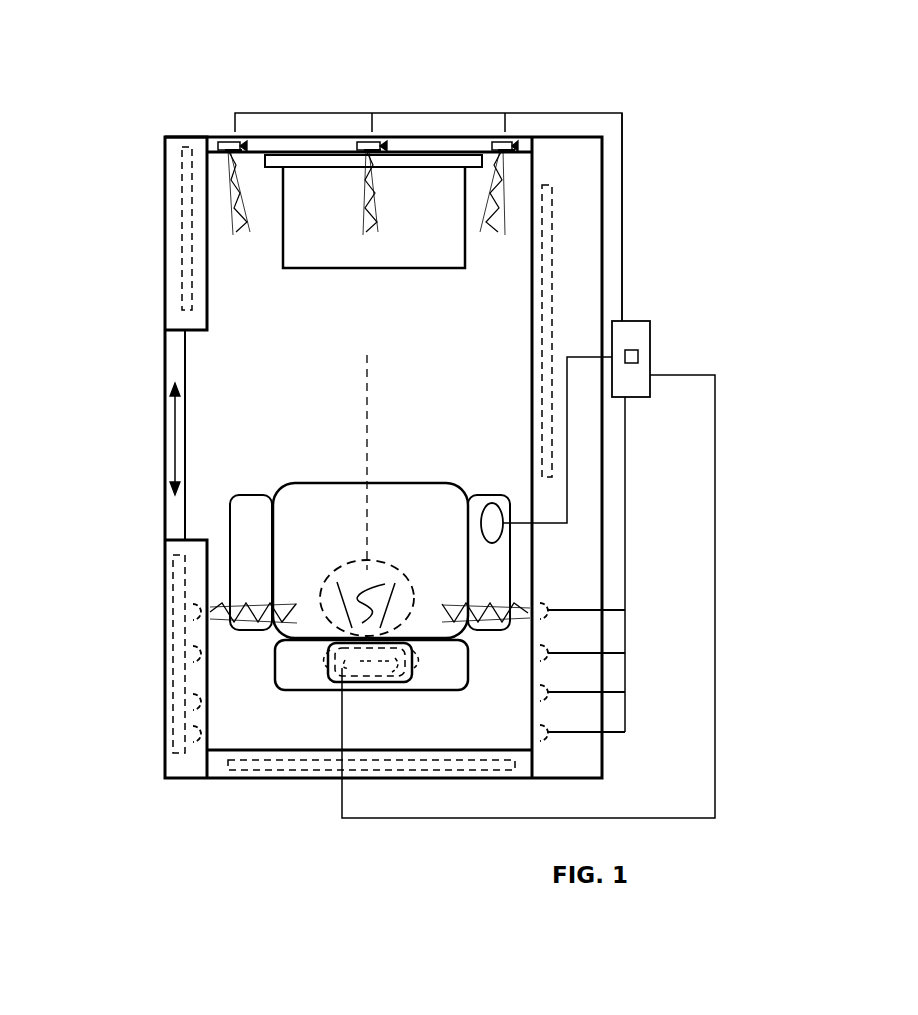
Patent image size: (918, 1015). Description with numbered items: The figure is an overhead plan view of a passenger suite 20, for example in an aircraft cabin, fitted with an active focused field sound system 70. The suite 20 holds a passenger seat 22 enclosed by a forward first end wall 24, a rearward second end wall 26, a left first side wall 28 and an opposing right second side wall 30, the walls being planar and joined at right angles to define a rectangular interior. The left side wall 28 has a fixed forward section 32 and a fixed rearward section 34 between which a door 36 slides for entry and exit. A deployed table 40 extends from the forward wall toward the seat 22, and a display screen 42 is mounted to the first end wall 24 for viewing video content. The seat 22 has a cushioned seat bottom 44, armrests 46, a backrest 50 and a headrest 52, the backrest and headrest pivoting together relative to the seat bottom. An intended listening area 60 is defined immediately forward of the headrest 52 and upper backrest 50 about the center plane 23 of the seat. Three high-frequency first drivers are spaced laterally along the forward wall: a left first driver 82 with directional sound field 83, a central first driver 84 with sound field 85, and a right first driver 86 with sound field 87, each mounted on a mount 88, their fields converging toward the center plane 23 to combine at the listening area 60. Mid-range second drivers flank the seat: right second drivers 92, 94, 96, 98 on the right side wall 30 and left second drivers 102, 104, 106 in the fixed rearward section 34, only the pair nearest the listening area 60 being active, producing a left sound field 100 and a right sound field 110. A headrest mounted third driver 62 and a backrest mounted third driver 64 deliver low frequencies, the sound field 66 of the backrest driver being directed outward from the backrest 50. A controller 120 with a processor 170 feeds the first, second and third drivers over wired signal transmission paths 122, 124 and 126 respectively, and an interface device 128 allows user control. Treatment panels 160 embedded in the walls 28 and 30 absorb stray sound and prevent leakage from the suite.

The passenger suite 20 is at (578, 70).
The passenger seat 22 is at (312, 461).
The center plane 23 is at (362, 504).
The first end wall 24 is at (292, 133).
The second end wall 26 is at (218, 779).
The first side wall 28 is at (128, 324).
The second side wall 30 is at (603, 506).
The fixed forward section 32 is at (165, 265).
The fixed rearward section 34 is at (165, 601).
The door 36 is at (165, 511).
The table 40 is at (388, 270).
The display screen 42 is at (320, 168).
The seat bottom 44 is at (418, 482).
The armrests 46 is at (245, 494).
The backrest 50 is at (290, 691).
The headrest 52 is at (328, 681).
The intended listening area 60 is at (397, 576).
The headrest mounted third driver 62 is at (383, 682).
The backrest mounted third driver 64 is at (418, 667).
The sound field 66 is at (395, 600).
The active focused field sound system 70 is at (665, 213).
The first driver 82 is at (225, 141).
The directional sound field 83 is at (240, 237).
The central first driver 84 is at (355, 141).
The directional sound field 85 is at (362, 229).
The lateral right first driver 86 is at (492, 141).
The directional sound field 87 is at (491, 237).
The camera mount 88 is at (241, 151).
The right second driver 92 is at (548, 618).
The right second driver 94 is at (548, 660).
The right second driver 96 is at (548, 702).
The right second driver 98 is at (548, 740).
The left sound field 100 is at (296, 624).
The left second driver 102 is at (194, 614).
The left second driver 104 is at (194, 656).
The left second driver 106 is at (194, 703).
The right sound field 110 is at (462, 625).
The controller 120 is at (651, 330).
The wired signal transmission path 122 is at (623, 285).
The wired signal transmission path 124 is at (626, 451).
The wired signal transmission path 126 is at (716, 434).
The interface device 128 is at (504, 539).
The treatment panels 160 is at (180, 213).
The processor 170 is at (640, 358).